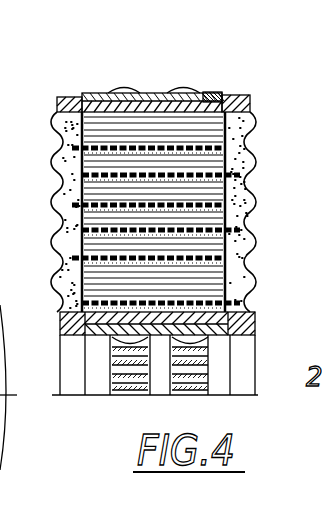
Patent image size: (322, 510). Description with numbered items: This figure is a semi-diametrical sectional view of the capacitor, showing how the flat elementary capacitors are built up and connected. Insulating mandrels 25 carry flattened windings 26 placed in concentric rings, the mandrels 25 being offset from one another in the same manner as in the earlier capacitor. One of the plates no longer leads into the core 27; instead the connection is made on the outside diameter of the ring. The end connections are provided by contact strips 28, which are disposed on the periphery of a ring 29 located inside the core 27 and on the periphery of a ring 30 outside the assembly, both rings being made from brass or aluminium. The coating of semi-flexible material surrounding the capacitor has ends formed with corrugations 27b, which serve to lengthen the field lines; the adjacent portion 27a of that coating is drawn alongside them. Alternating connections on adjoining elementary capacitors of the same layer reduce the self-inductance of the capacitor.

The insulating mandrel 25 is at (256, 130).
The flattened winding 26 is at (256, 192).
The core 27 is at (242, 323).
The casing outer layer 27a is at (54, 181).
The corrugation 27b is at (53, 214).
The contact strip 28 is at (180, 88).
The ring 29 is at (106, 340).
The ring 30 is at (217, 90).